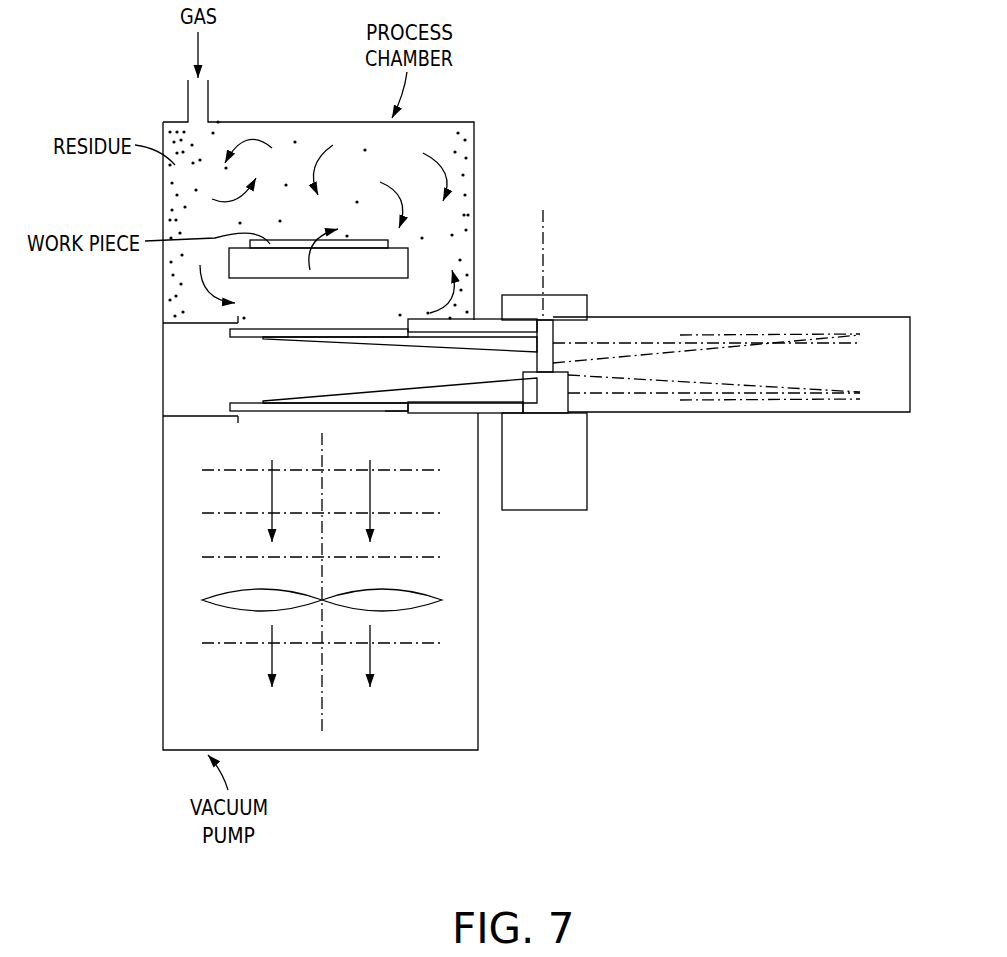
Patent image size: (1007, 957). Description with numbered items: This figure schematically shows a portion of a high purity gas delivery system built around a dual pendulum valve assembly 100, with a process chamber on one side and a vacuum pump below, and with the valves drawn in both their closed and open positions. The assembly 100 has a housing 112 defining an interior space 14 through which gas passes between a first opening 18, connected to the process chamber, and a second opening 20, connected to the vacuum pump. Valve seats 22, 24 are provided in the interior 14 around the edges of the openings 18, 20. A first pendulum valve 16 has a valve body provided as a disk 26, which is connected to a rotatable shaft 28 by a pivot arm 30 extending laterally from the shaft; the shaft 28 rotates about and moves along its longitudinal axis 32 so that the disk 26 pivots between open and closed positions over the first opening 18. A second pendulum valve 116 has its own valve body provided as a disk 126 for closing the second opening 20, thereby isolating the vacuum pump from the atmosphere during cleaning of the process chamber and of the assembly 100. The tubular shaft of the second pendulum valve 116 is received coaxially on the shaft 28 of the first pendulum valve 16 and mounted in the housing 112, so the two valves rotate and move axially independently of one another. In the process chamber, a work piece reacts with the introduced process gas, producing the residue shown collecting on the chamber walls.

The interior space 14 is at (206, 363).
The pendulum valve 16 is at (486, 318).
The first opening 18 is at (238, 322).
The second opening 20 is at (238, 419).
The valve seat 22 is at (240, 327).
The valve seat 24 is at (240, 412).
The disk 26 is at (268, 339).
The shaft 28 is at (555, 330).
The pivot arm 30 is at (462, 345).
The longitudinal axis 32 is at (548, 232).
The dual pendulum valve assembly 100 is at (790, 232).
The housing 112 is at (863, 317).
The second pendulum valve 116 is at (442, 410).
The disk 126 is at (386, 413).